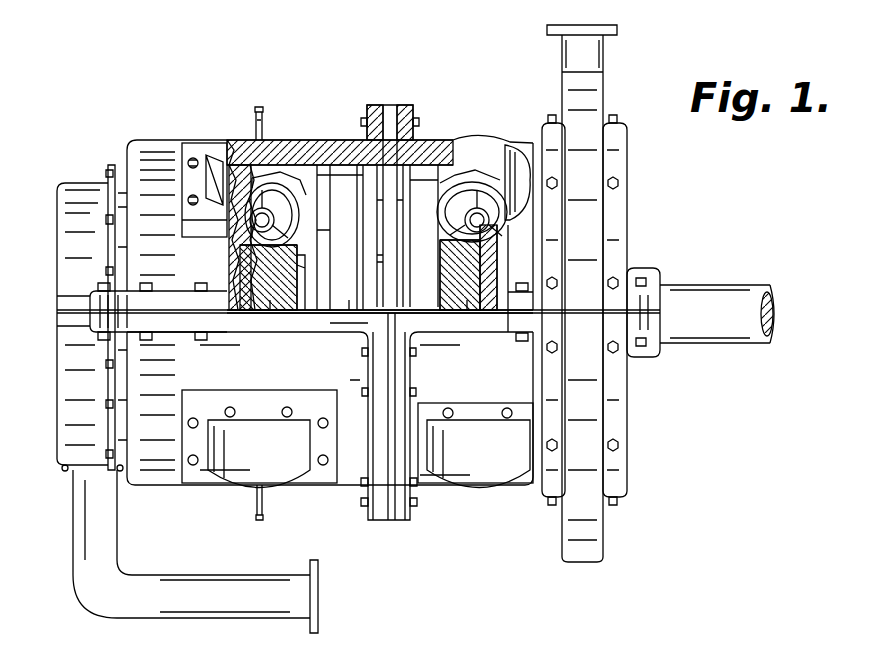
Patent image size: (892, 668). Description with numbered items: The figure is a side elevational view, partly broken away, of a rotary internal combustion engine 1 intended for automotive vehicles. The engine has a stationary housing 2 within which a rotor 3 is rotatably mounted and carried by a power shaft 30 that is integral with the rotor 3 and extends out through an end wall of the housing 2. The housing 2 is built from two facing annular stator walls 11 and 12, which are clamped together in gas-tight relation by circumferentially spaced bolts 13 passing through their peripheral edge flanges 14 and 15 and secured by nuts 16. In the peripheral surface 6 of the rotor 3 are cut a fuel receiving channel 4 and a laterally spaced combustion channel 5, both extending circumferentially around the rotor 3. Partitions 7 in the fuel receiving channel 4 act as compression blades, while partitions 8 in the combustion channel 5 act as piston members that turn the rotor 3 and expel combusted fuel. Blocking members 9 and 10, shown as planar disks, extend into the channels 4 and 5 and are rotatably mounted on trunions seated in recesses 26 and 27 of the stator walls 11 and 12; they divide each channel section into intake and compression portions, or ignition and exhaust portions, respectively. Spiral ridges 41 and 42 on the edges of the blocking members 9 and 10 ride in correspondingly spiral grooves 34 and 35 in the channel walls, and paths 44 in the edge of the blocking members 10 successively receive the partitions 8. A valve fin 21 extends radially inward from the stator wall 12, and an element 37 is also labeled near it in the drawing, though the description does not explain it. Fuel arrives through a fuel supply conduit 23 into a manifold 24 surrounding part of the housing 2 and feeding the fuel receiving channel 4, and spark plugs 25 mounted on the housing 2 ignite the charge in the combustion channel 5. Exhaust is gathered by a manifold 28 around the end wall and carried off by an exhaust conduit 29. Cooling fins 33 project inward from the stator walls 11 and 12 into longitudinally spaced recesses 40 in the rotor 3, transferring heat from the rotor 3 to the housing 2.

The rotary internal combustion engine 1 is at (697, 503).
The housing 2 is at (318, 136).
The rotor 3 is at (312, 300).
The fuel receiving channel 4 is at (467, 310).
The combustion channel 5 is at (256, 273).
The peripheral surface 6 is at (350, 303).
The partitions 7 is at (482, 252).
The partitions 8 is at (270, 303).
The blocking members 9 is at (448, 223).
The blocking members 10 is at (286, 230).
The stator wall 11 is at (437, 140).
The stator wall 12 is at (148, 140).
The bolts 13 is at (368, 510).
The peripheral edge flange 14 is at (399, 107).
The peripheral edge flange 15 is at (374, 107).
The nuts 16 is at (416, 510).
The valve fin 21 is at (373, 226).
The fuel supply conduit 23 is at (605, 50).
The manifold 24 is at (607, 528).
The spark plugs 25 is at (256, 113).
The recesses 26 is at (503, 150).
The recesses 27 is at (236, 150).
The manifold 28 is at (57, 360).
The exhaust conduit 29 is at (142, 575).
The power shaft 30 is at (692, 345).
The cooling fins 33 is at (338, 173).
The grooves 34 is at (438, 283).
The grooves 35 is at (295, 287).
The partition 37 is at (370, 253).
The recesses 40 is at (397, 307).
The ridges 41 is at (447, 188).
The ridges 42 is at (302, 198).
The paths 44 is at (235, 217).